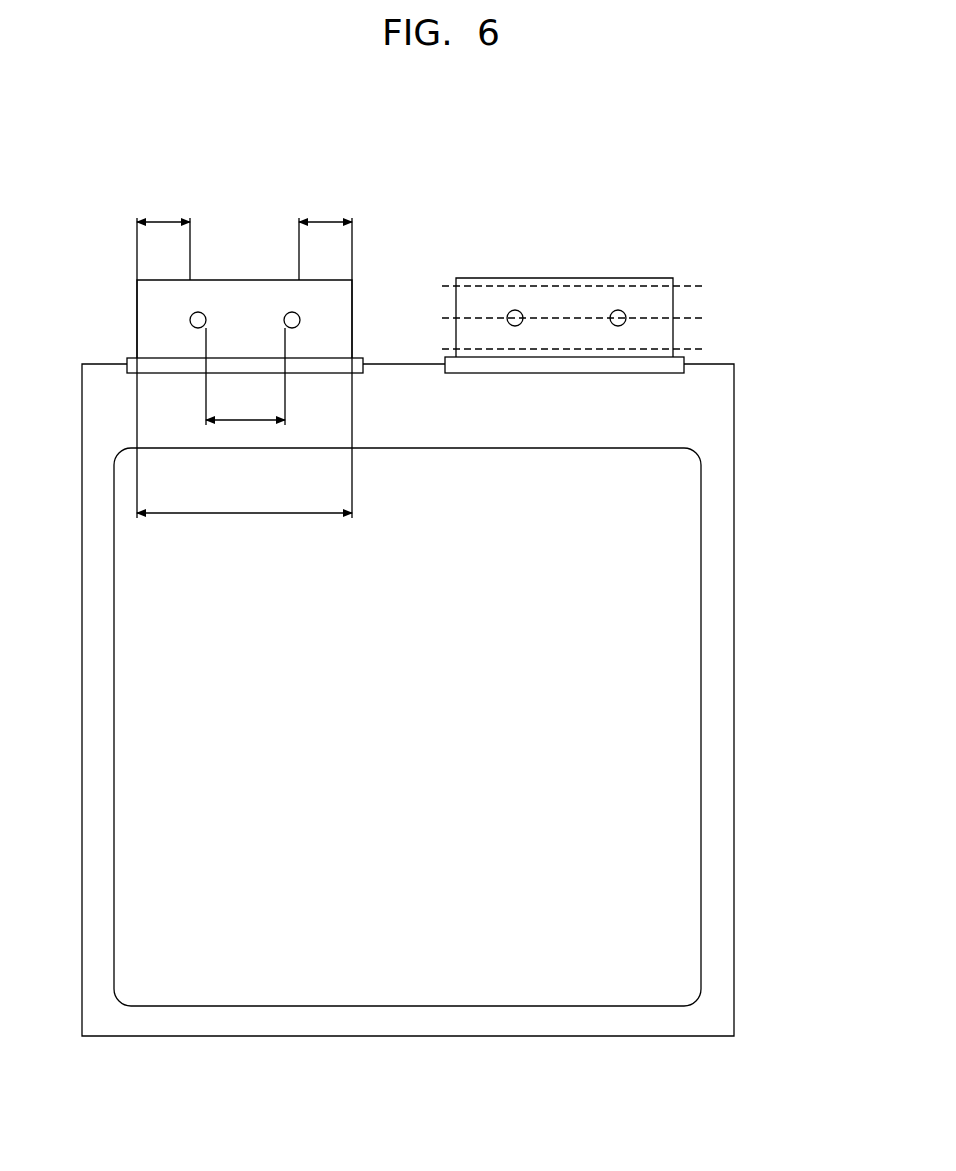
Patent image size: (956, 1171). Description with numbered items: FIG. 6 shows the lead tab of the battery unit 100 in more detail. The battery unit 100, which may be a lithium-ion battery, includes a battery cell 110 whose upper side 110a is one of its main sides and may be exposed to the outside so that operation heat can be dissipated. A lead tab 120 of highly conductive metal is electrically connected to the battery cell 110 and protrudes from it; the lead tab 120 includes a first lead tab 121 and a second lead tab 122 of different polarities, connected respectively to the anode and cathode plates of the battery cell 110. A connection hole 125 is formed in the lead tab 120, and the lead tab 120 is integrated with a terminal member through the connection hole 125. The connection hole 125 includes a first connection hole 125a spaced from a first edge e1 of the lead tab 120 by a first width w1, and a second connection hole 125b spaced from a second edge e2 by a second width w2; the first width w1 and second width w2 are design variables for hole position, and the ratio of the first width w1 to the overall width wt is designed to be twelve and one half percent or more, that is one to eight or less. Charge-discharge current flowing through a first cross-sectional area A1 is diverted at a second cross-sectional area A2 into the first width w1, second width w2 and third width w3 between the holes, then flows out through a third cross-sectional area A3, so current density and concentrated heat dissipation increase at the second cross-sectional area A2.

The battery unit 100 is at (674, 178).
The battery cell 110 is at (704, 709).
The upper side 110a is at (637, 768).
The lead tab 120 is at (405, 260).
The first lead tab 121 is at (252, 287).
The second lead tab 122 is at (565, 293).
The connection hole 125 is at (373, 320).
The first connection hole 125a is at (192, 326).
The second connection hole 125b is at (295, 328).
The first width w1 is at (163, 239).
The second width w2 is at (325, 239).
The third width w3 is at (245, 376).
The overall width wt is at (244, 438).
The first edge e1 is at (137, 325).
The second edge e2 is at (353, 318).
The first cross-sectional area A1 is at (590, 349).
The second cross-sectional area A2 is at (590, 318).
The third cross-sectional area A3 is at (590, 286).